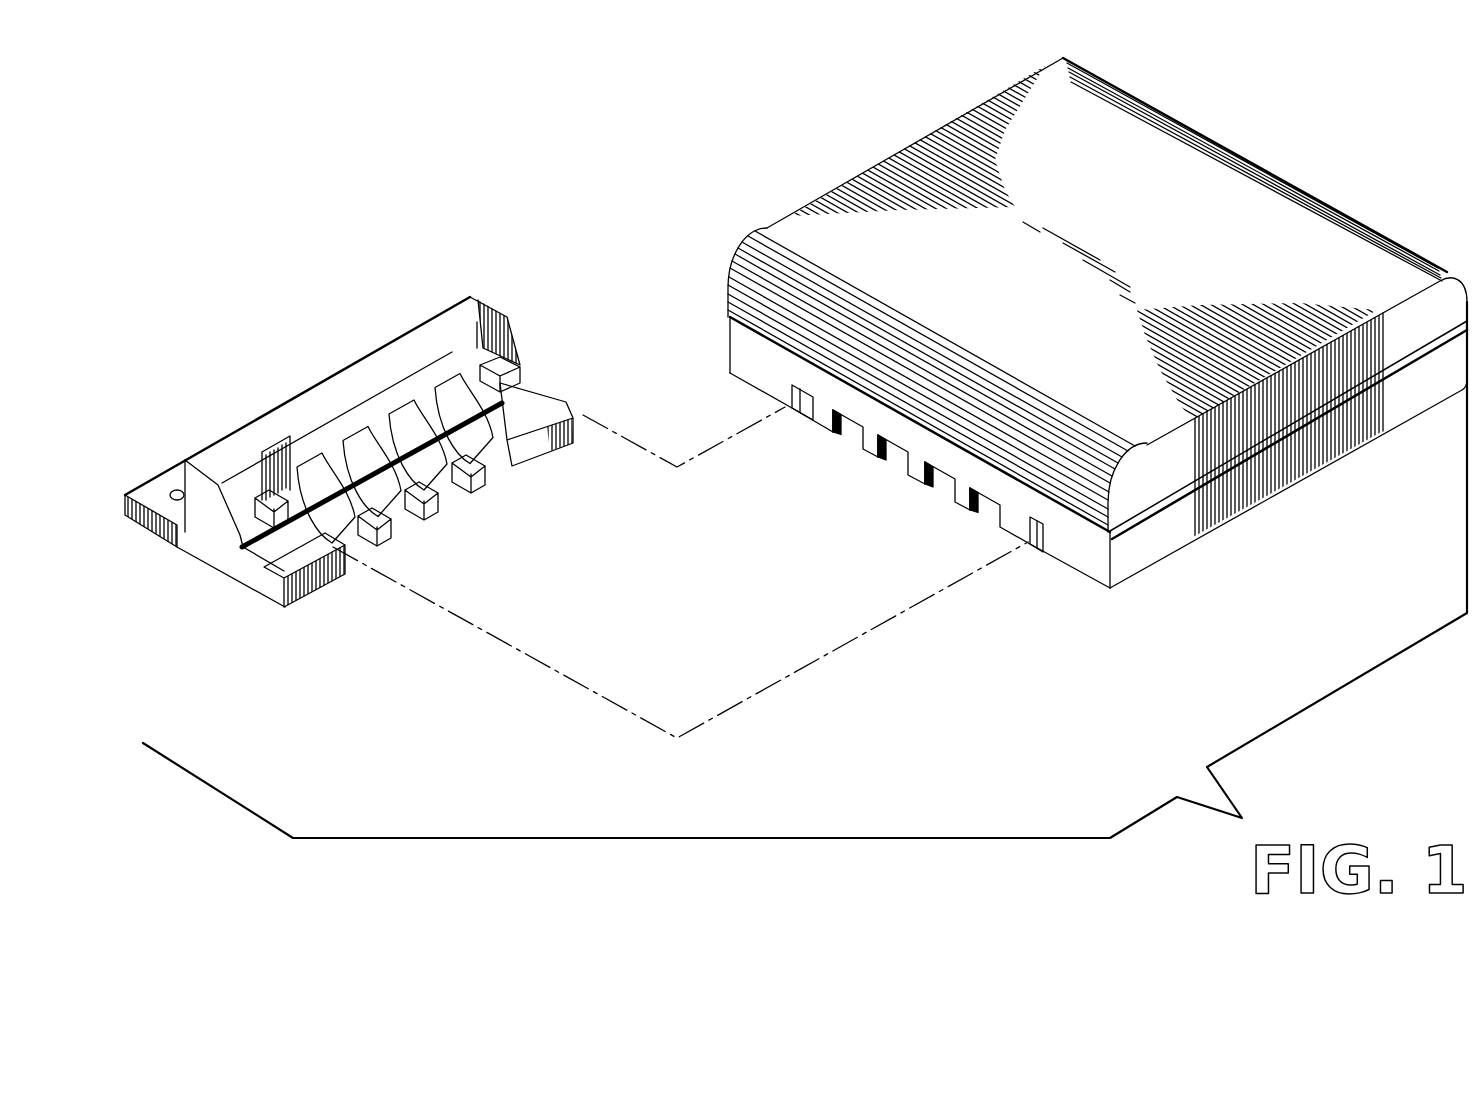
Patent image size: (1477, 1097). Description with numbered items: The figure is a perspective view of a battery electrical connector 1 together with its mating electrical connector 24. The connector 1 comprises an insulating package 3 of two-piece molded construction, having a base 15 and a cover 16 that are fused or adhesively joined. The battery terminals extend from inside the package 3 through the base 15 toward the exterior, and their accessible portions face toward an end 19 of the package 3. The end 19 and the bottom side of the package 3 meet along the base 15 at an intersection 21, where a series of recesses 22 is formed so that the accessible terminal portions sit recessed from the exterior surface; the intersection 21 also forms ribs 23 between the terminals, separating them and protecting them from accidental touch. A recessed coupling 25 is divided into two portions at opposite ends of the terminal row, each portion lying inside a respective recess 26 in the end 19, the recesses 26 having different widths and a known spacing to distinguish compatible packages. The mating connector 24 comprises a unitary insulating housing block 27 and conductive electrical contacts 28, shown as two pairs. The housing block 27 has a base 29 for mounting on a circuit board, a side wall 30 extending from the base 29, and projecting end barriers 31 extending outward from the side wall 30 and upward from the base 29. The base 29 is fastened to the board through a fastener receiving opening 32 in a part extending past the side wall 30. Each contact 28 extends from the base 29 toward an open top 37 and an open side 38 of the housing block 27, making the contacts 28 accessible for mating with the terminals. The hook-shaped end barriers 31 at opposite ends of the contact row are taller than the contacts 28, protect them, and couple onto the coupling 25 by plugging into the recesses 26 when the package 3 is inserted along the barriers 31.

The electrical connector 1 is at (908, 210).
The insulating package 3 is at (1162, 485).
The base 15 is at (1433, 382).
The cover 16 is at (1385, 347).
The end 19 is at (750, 343).
The intersection 21 is at (1080, 575).
The recesses 22 is at (980, 515).
The ribs 23 is at (958, 503).
The mating electrical connector 24 is at (343, 375).
The recessed coupling 25 is at (1030, 556).
The recesses 26 is at (1022, 530).
The housing block 27 is at (208, 555).
The electrical contacts 28 is at (453, 385).
The base 29 is at (265, 587).
The side wall 30 is at (212, 500).
The end barriers 31 is at (498, 363).
The fastener receiving opening 32 is at (177, 489).
The open top 37 is at (478, 347).
The open side 38 is at (533, 407).